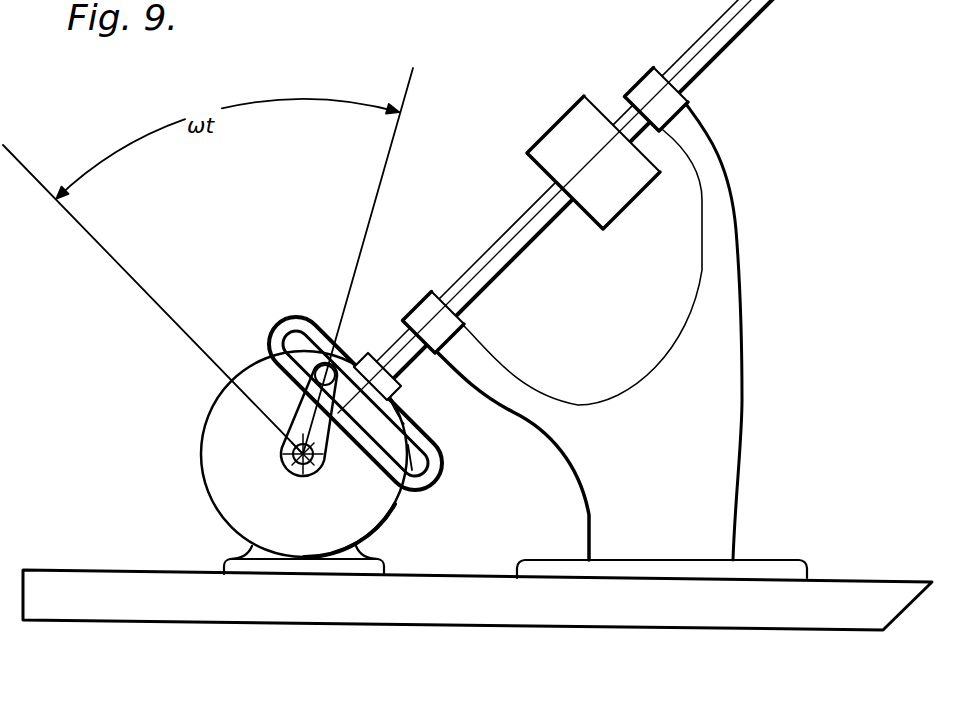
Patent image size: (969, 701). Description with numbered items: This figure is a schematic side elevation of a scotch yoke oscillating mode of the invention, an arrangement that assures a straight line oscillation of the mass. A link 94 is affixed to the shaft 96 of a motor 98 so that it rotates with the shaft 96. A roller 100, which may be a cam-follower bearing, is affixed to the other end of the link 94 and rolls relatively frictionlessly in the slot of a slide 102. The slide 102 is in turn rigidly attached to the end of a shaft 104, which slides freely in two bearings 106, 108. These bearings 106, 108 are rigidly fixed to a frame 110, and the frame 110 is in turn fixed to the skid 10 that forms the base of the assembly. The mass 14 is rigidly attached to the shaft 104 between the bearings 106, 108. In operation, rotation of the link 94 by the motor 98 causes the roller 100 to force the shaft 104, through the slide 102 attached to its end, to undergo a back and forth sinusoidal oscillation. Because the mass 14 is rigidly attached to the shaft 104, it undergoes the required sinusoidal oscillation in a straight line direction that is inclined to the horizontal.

The skid 10 is at (175, 577).
The mass 14 is at (578, 125).
The link 94 is at (293, 428).
The shaft 96 is at (290, 465).
The motor 98 is at (215, 428).
The roller 100 is at (280, 343).
The slide 102 is at (424, 470).
The shaft 104 is at (523, 227).
The bearing 106 is at (438, 315).
The bearing 108 is at (658, 83).
The frame 110 is at (734, 360).